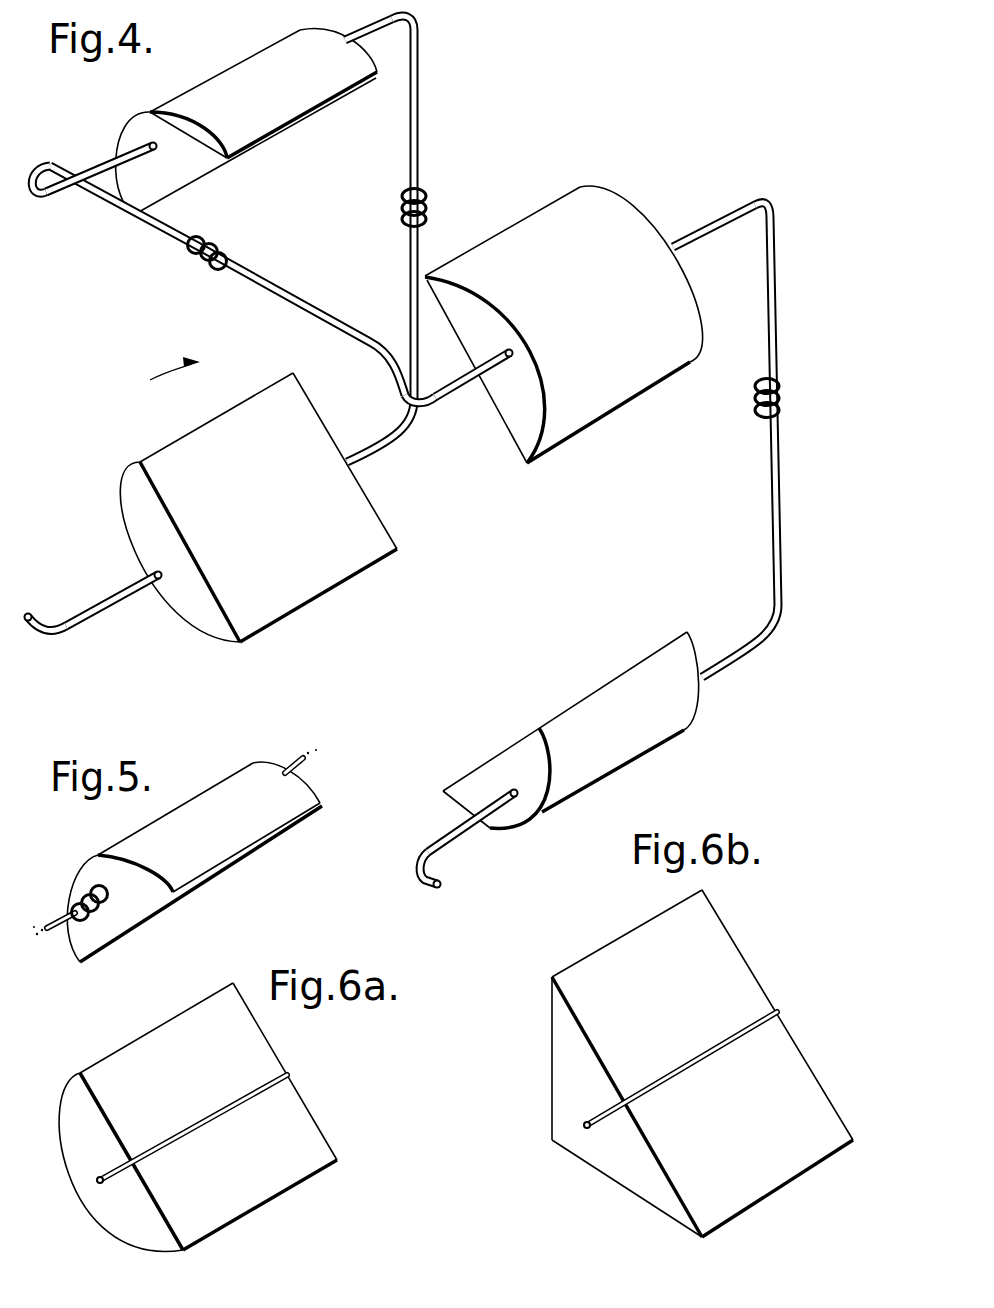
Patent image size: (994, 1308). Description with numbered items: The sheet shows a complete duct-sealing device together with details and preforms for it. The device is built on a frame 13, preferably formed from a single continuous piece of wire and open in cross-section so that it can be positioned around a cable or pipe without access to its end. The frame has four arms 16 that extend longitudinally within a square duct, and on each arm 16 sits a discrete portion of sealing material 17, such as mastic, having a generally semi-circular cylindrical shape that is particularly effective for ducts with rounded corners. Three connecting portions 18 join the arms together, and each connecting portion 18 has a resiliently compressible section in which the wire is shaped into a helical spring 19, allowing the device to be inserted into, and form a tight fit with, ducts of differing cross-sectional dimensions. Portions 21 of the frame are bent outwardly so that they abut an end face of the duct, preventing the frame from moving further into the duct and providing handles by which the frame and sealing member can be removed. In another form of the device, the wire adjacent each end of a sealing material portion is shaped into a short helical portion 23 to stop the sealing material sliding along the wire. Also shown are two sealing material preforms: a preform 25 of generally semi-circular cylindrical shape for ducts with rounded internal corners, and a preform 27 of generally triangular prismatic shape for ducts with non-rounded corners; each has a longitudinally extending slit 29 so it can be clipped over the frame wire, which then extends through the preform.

In FIG. 4, the frame 13 is at (155, 376).
In FIG. 5, the frame 13 is at (47, 930).
In FIG. 4, the arm 16 is at (106, 160).
In FIG. 4, the portion of sealing material 17 is at (285, 104).
In FIG. 5, the portion of sealing material 17 is at (227, 835).
In FIG. 4, the connecting portion 18 is at (408, 283).
In FIG. 4, the helical spring 19 is at (200, 263).
In FIG. 4, the outwardly bent portion 21 is at (38, 195).
In FIG. 5, the short helical portion 23 is at (108, 906).
In FIG. 6A, the preform 25 is at (283, 1120).
In FIG. 6B, the preform 27 is at (783, 1070).
In FIG. 6A, the longitudinally extending slit 29 is at (220, 1113).
In FIG. 6B, the longitudinally extending slit 29 is at (693, 1060).